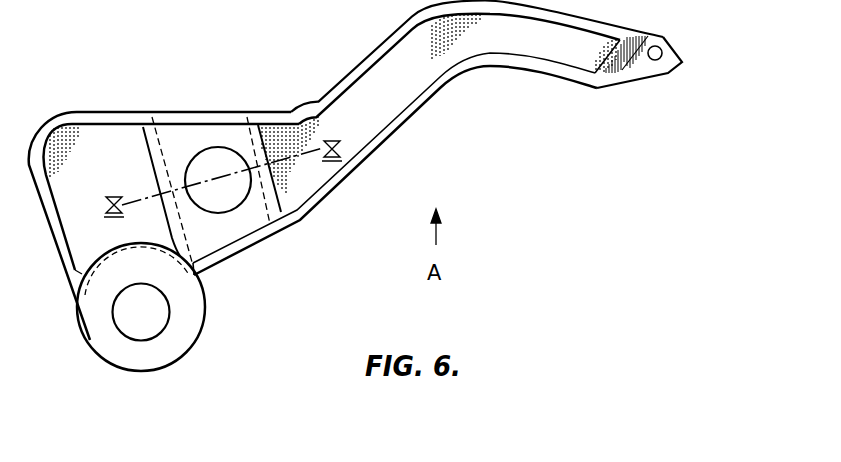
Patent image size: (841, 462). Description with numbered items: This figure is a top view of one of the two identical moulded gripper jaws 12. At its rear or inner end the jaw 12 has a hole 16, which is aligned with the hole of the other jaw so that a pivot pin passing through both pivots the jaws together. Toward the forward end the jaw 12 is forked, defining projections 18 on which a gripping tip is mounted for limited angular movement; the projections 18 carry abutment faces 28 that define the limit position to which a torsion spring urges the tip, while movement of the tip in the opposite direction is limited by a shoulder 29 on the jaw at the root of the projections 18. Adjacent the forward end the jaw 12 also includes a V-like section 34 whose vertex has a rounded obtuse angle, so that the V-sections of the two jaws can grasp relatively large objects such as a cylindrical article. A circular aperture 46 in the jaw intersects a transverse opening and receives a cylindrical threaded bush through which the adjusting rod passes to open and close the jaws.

The moulded jaw 12 is at (61, 117).
The hole 16 is at (128, 322).
The projection 18 is at (664, 41).
The abutment face 28 is at (676, 68).
The shoulder 29 is at (607, 75).
The V-like section 34 is at (472, 72).
The circular aperture 46 is at (236, 203).